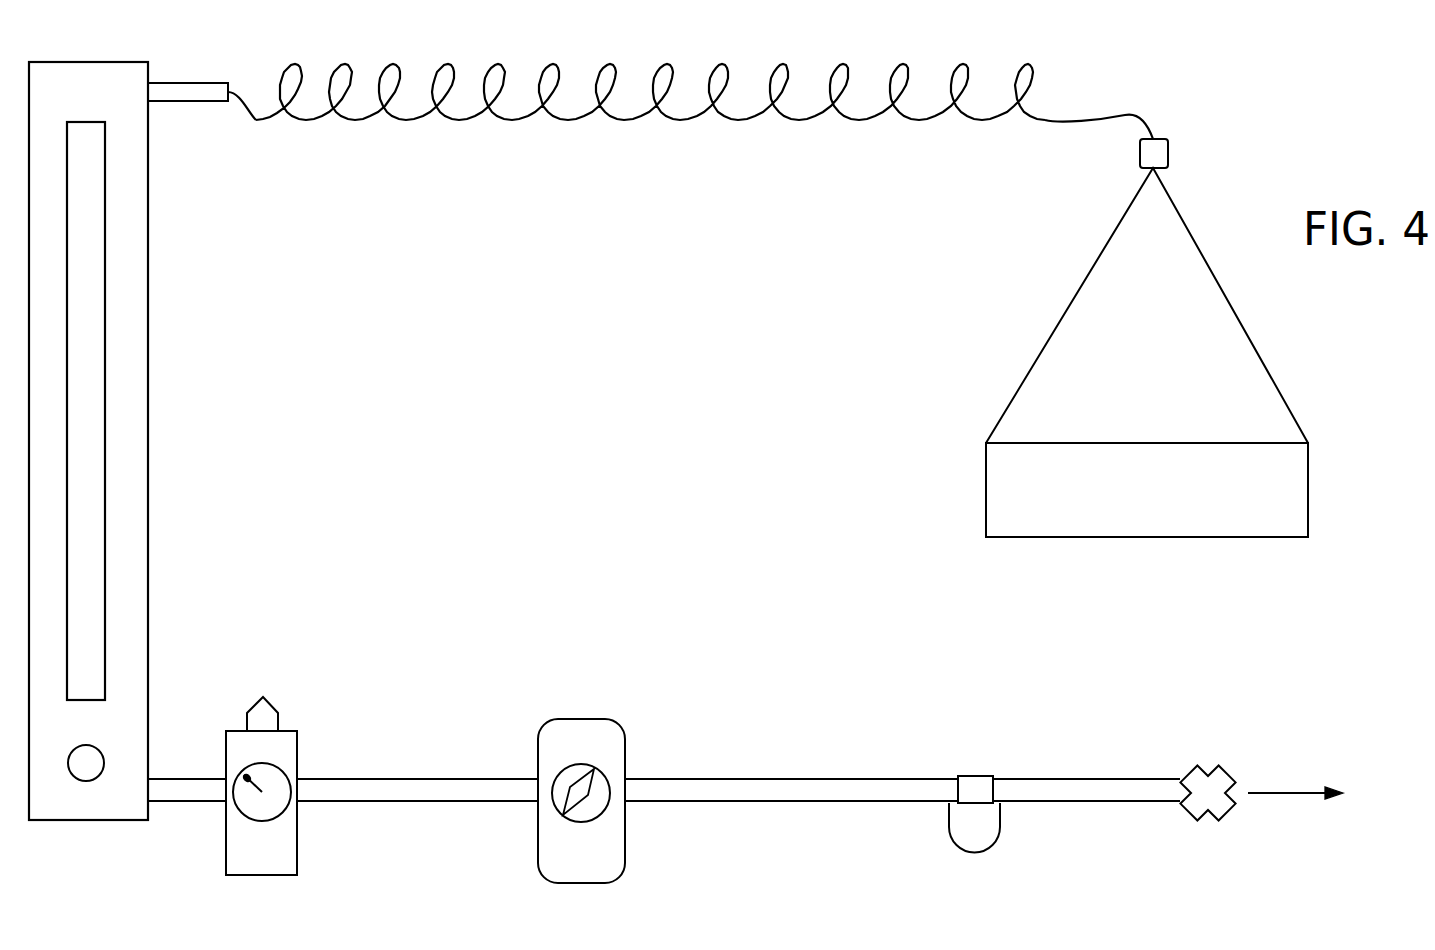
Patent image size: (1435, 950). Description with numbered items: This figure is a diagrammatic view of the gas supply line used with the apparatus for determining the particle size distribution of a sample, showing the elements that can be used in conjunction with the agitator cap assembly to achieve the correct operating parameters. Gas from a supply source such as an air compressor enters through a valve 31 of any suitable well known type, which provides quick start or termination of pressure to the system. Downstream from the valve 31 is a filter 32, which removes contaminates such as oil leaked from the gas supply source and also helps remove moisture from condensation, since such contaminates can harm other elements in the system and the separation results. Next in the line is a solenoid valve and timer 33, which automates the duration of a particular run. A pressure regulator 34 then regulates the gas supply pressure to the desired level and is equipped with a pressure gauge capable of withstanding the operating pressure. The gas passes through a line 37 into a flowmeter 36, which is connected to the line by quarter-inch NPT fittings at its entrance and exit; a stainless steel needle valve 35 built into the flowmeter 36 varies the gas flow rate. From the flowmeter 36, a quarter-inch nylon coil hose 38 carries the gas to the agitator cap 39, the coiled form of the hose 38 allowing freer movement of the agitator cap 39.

The valve 31 is at (1203, 765).
The filter 32 is at (977, 788).
The solenoid valve and timer 33 is at (605, 733).
The pressure regulator 34 is at (283, 742).
The stainless steel needle valve 35 is at (88, 757).
The flowmeter 36 is at (150, 583).
The conduit 37 is at (193, 83).
The nylon coil hose 38 is at (667, 67).
The agitator cap 39 is at (1067, 342).